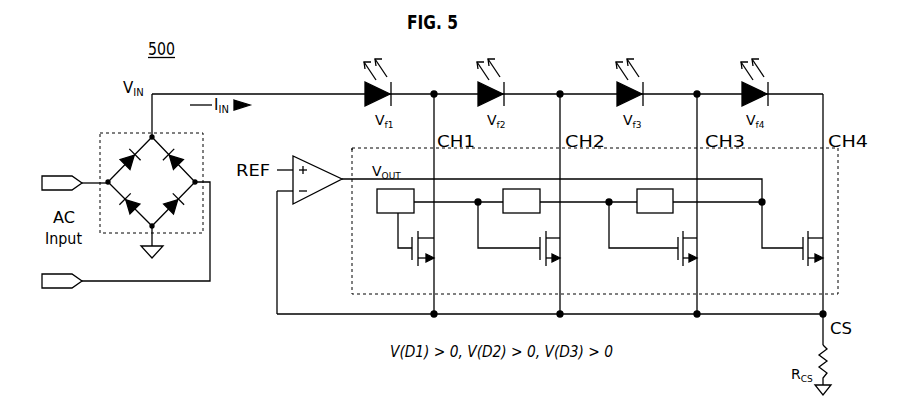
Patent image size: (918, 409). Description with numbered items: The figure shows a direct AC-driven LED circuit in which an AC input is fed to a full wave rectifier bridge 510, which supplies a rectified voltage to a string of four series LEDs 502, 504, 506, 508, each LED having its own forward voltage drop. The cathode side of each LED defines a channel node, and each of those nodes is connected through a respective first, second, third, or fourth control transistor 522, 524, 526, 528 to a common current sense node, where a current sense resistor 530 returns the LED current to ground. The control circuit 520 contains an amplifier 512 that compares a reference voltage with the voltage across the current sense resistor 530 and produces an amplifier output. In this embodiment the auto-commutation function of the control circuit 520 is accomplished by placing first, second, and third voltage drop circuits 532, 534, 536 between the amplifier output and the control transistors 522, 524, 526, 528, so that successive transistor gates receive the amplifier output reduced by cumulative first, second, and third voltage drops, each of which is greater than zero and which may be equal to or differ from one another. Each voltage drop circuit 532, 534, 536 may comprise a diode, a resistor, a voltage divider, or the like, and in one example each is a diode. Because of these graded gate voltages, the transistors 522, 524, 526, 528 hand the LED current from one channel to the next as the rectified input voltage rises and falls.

The LED 502 is at (366, 84).
The LED 504 is at (479, 84).
The LED 506 is at (618, 84).
The LED 508 is at (743, 84).
The full wave rectifier bridge 510 is at (130, 133).
The amplifier 512 is at (308, 200).
The control circuit 520 is at (352, 148).
The first control transistor 522 is at (412, 262).
The second control transistor 524 is at (540, 262).
The third control transistor 526 is at (678, 262).
The fourth control transistor 528 is at (802, 262).
The current sense resistor 530 is at (818, 354).
The first voltage drop circuit 532 is at (394, 214).
The second voltage drop circuit 534 is at (521, 214).
The third voltage drop circuit 536 is at (654, 214).